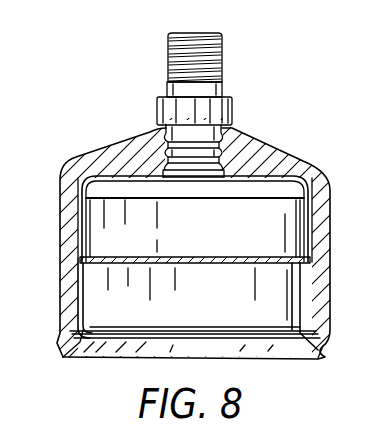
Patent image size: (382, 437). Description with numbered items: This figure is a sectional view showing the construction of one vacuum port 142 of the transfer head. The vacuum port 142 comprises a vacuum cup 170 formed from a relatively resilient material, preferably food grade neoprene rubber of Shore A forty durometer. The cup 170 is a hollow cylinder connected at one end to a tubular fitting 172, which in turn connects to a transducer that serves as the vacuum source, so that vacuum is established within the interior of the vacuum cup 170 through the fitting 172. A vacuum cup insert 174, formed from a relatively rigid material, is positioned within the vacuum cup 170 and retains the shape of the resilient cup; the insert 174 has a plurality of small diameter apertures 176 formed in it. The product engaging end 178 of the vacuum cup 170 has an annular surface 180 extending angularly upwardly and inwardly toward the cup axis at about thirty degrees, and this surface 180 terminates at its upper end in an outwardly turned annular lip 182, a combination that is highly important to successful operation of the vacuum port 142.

The vacuum port 142 is at (191, 218).
The vacuum cup 170 is at (169, 230).
The tubular fitting 172 is at (228, 105).
The vacuum cup insert 174 is at (195, 219).
The small diameter apertures 176 is at (196, 295).
The product engaging end 178 is at (67, 368).
The annular surface 180 is at (317, 377).
The annular lip 182 is at (195, 322).